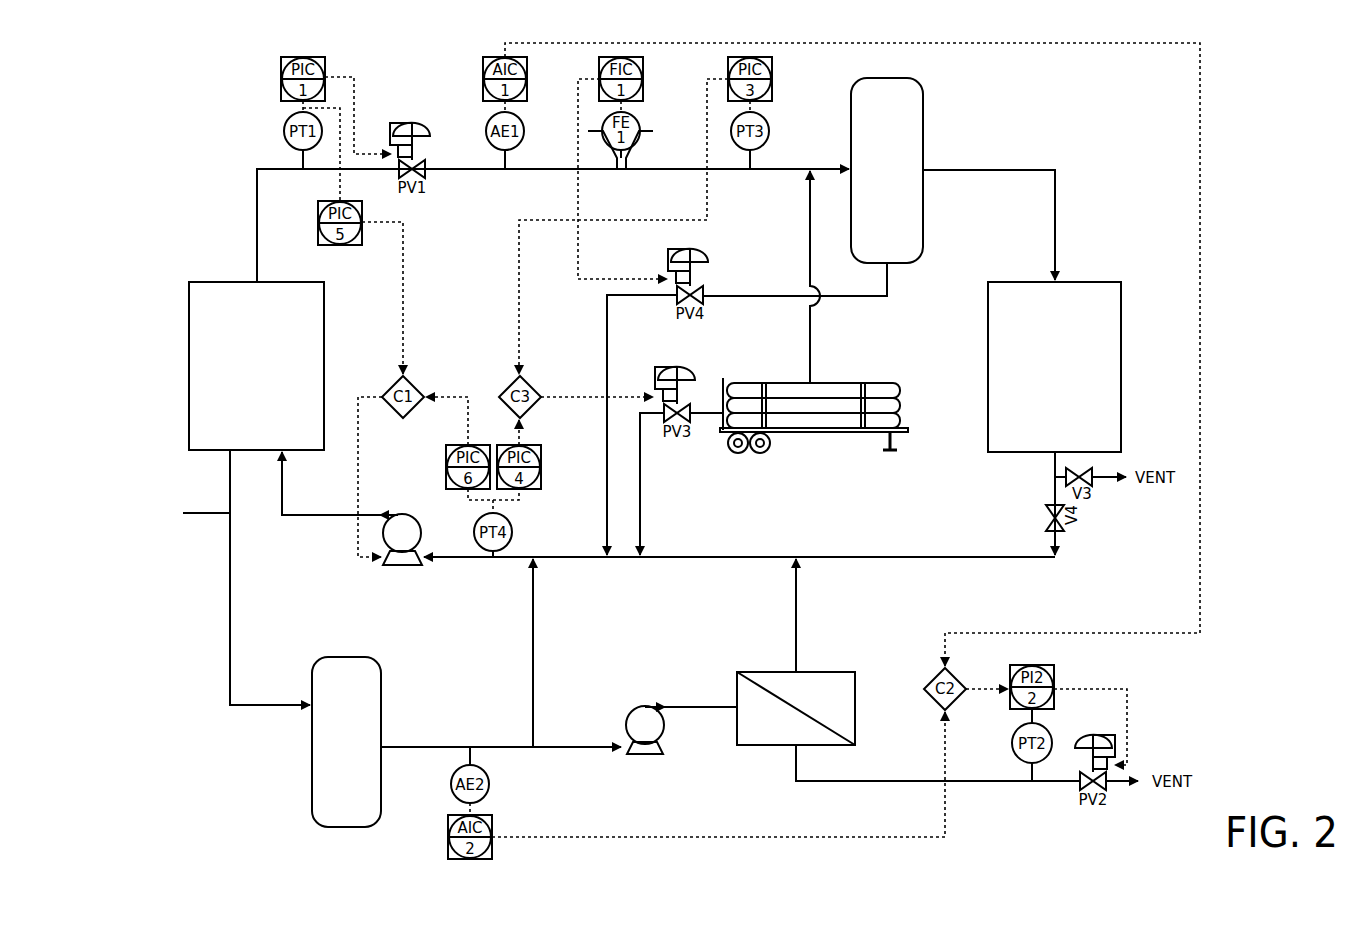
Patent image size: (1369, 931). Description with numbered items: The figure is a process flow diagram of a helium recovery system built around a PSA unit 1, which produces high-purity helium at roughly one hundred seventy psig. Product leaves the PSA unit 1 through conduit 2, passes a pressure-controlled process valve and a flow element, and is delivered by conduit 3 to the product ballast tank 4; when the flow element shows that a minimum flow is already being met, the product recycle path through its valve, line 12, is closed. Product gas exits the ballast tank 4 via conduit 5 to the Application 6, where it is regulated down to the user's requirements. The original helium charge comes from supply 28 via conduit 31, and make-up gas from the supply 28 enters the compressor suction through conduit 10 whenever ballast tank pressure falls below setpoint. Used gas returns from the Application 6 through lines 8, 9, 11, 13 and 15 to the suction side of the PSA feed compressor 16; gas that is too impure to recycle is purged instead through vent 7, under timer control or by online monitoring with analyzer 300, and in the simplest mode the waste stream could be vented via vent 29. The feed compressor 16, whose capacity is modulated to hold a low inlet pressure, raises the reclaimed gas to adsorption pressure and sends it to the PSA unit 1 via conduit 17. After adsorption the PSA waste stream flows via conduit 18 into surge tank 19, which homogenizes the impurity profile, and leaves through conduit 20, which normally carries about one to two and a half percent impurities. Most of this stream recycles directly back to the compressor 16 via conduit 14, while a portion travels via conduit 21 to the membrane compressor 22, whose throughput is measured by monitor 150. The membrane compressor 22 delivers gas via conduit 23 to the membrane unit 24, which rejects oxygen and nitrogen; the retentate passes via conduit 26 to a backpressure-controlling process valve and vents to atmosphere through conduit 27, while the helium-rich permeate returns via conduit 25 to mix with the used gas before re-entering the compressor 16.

The PSA unit 1 is at (256, 366).
The conduit 2 is at (257, 222).
The conduit 3 is at (476, 169).
The product ballast tank 4 is at (887, 170).
The conduit 5 is at (1055, 210).
The Application 6 is at (1054, 367).
The vent 7 is at (1108, 483).
The conduit 8 is at (937, 557).
The conduit 9 is at (738, 557).
The conduit 10 is at (641, 480).
The conduit 11 is at (620, 559).
The line 12 is at (607, 347).
The conduit 13 is at (563, 559).
The conduit 14 is at (532, 662).
The conduit 15 is at (462, 559).
The PSA feed compressor 16 is at (401, 565).
The conduit 17 is at (318, 516).
The conduit 18 is at (230, 585).
The surge tank 19 is at (346, 742).
The conduit 20 is at (494, 747).
The conduit 21 is at (591, 747).
The membrane compressor 22 is at (641, 707).
The conduit 23 is at (705, 707).
The membrane unit 24 is at (796, 708).
The conduit 25 is at (796, 607).
The conduit 26 is at (796, 758).
The conduit 27 is at (1118, 787).
The supply 28 is at (843, 383).
The vent 29 is at (210, 512).
The conduit 31 is at (808, 246).
The monitor 150 is at (665, 704).
The analyzer 300 is at (1058, 478).